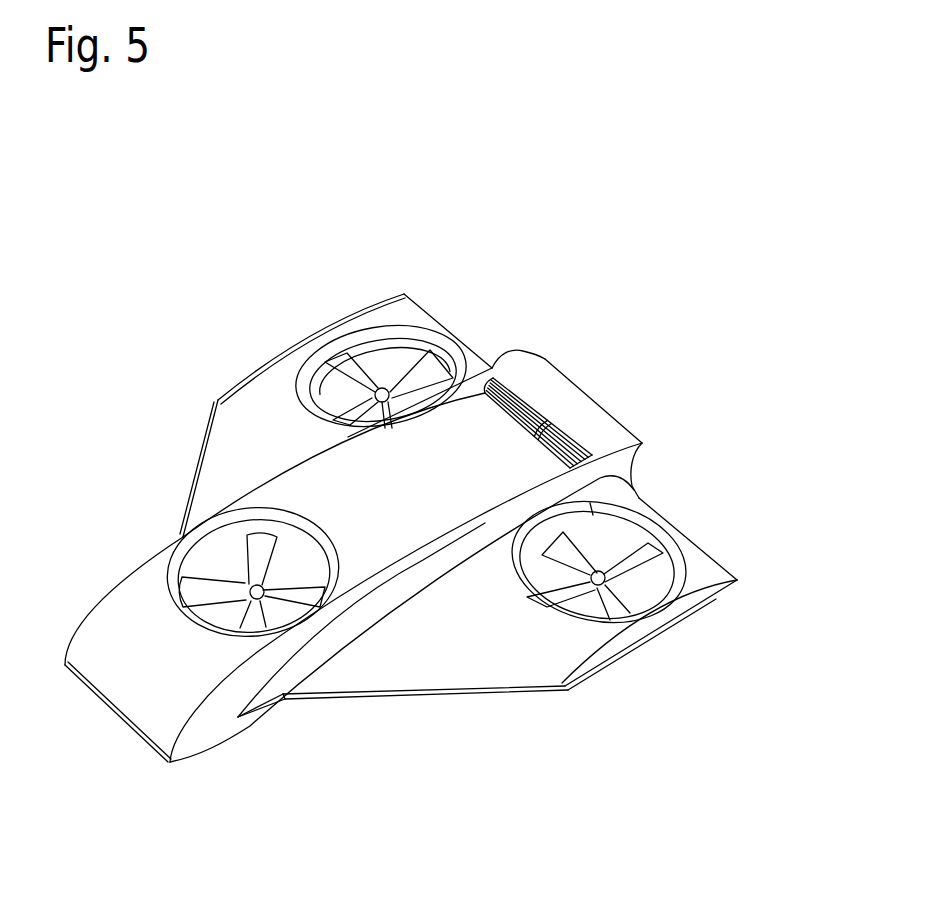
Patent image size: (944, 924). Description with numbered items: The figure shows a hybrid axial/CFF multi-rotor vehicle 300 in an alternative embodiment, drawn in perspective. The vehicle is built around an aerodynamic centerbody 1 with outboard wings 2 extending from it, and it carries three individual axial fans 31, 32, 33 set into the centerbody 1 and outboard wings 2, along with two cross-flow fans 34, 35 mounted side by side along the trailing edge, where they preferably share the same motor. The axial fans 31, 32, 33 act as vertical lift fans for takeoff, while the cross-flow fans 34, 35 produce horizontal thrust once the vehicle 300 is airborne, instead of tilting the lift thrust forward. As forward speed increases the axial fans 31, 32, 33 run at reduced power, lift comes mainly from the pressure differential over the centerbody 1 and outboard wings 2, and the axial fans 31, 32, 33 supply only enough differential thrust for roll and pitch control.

The hybrid axial/CFF multi-rotor vehicle 300 is at (689, 229).
The aerodynamic centerbody 1 is at (148, 672).
The outboard wings 2 is at (253, 418).
The axial fan 31 is at (258, 557).
The axial fan 32 is at (348, 363).
The axial fan 33 is at (640, 555).
The cross-flow fan 34 is at (522, 391).
The cross-flow fan 35 is at (577, 437).